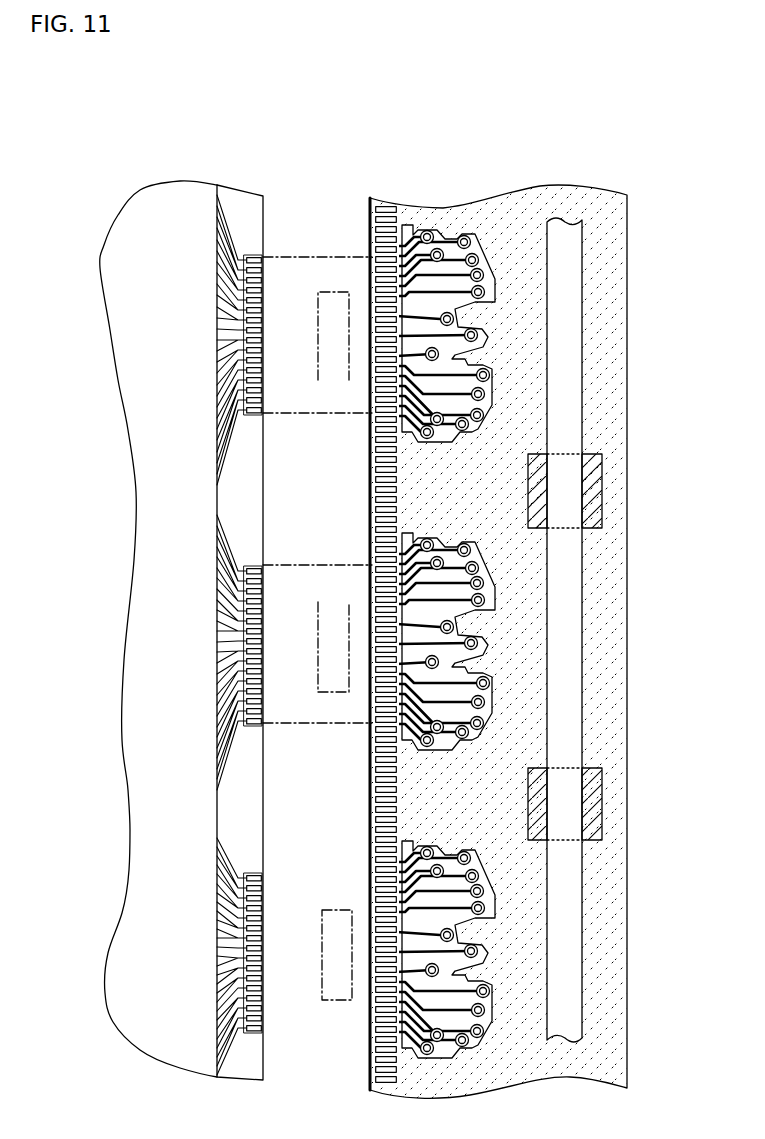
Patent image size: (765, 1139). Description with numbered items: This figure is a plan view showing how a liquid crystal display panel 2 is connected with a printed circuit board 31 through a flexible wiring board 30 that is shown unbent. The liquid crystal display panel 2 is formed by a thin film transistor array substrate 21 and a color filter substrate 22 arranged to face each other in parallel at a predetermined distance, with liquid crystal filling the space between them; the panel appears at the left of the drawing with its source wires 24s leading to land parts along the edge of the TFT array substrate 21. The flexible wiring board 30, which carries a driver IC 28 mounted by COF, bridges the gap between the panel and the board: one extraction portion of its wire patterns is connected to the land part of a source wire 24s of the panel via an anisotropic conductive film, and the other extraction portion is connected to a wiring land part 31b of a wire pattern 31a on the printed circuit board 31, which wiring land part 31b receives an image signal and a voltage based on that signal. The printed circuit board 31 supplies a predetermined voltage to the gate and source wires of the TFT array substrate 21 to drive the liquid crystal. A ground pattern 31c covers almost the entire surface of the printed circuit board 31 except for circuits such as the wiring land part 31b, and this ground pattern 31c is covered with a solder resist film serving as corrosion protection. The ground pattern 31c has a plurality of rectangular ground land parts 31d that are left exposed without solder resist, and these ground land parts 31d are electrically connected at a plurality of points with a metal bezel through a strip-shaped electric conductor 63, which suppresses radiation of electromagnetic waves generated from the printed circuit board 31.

The liquid crystal display panel 2 is at (118, 198).
The color filter substrate 22 is at (170, 207).
The thin film transistor array substrate 21 is at (238, 203).
The source wire 24s is at (242, 243).
The flexible wiring board 30 is at (315, 256).
The driver IC 28 is at (333, 291).
The printed circuit board 31 is at (628, 592).
The wire pattern 31a is at (404, 240).
The wiring land part 31b is at (384, 257).
The ground pattern 31c is at (615, 358).
The ground land part 31d is at (593, 493).
The strip-shaped electric conductor 63 is at (583, 647).